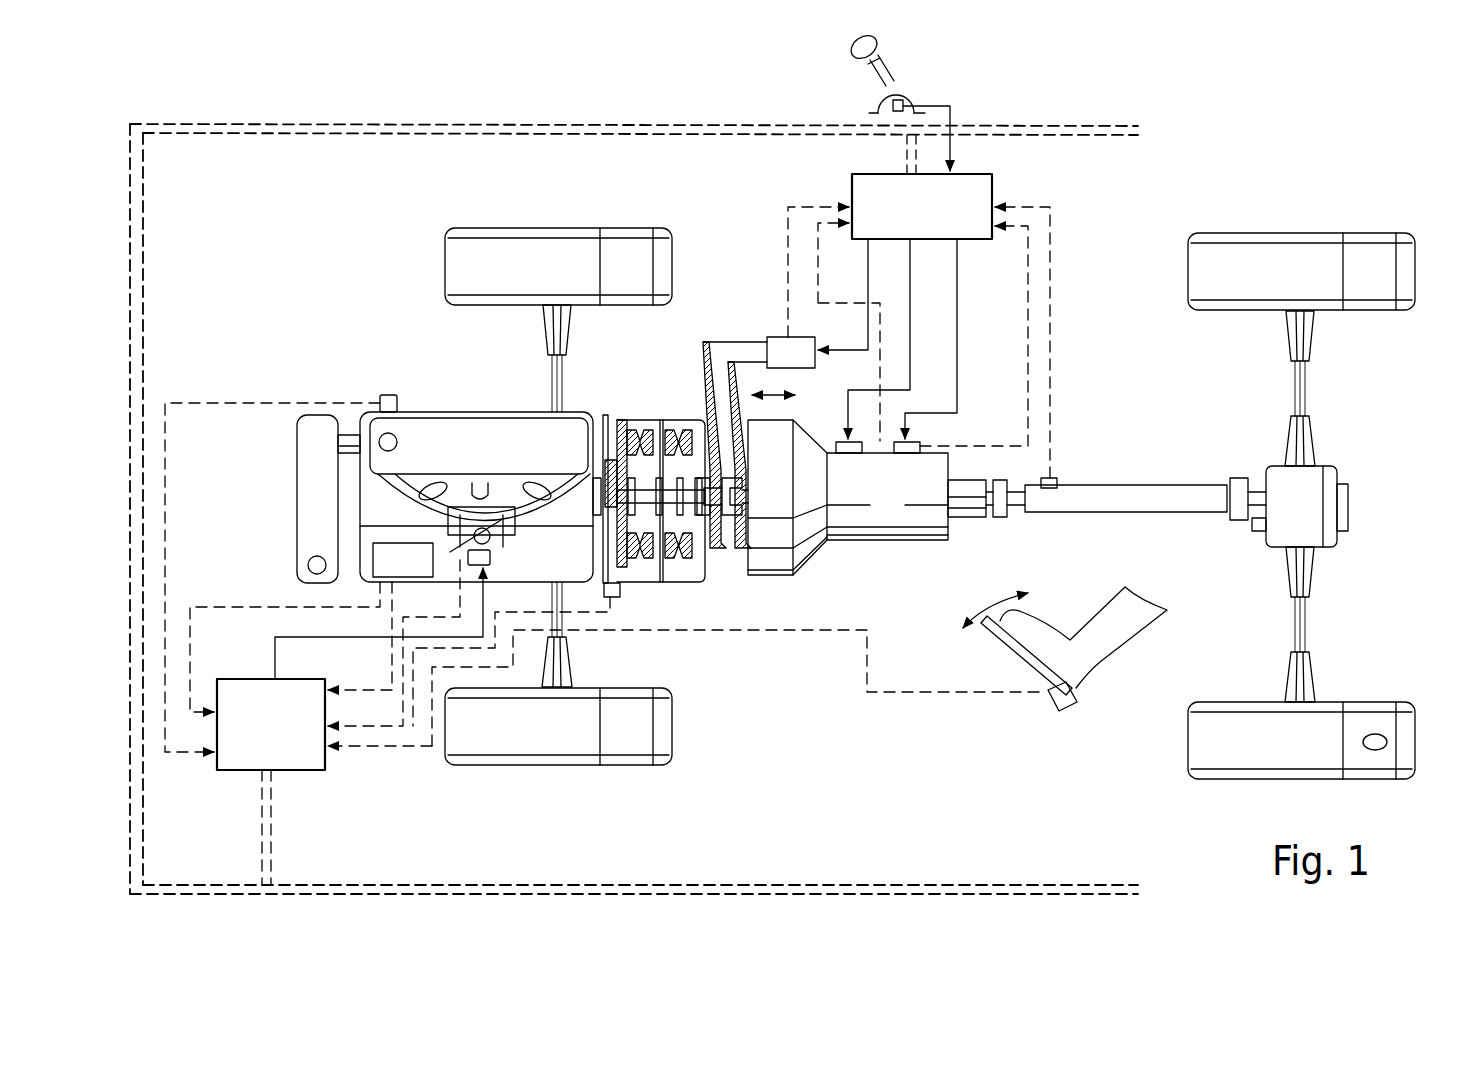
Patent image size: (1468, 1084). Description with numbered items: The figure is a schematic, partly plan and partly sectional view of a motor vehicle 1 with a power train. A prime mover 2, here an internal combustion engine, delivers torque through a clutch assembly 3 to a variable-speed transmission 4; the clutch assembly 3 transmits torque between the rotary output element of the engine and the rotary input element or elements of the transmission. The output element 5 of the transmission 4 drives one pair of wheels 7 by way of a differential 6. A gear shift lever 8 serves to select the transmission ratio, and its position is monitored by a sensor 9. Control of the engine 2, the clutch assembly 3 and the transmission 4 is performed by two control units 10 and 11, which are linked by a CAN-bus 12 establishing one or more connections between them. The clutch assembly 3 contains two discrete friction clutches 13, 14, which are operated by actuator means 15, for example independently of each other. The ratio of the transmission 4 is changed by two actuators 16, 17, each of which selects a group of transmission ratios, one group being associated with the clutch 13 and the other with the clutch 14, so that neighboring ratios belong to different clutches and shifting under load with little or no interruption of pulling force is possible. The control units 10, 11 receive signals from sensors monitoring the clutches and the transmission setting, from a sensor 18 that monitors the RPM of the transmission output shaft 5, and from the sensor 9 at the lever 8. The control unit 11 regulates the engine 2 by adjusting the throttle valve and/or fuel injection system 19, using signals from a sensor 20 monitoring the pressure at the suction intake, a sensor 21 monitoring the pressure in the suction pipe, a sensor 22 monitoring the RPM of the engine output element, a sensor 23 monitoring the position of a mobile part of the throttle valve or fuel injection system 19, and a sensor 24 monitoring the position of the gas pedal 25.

The motor vehicle 1 is at (908, 752).
The prime mover 2 is at (494, 440).
The clutch assembly 3 is at (620, 415).
The variable-speed transmission 4 is at (904, 510).
The output element 5 is at (1172, 488).
The differential 6 is at (1348, 500).
The wheels 7 is at (1382, 718).
The gear shift lever 8 is at (853, 57).
The sensor 9 is at (898, 92).
The control unit 10 is at (938, 215).
The control unit 11 is at (288, 738).
The CAN-bus 12 is at (473, 885).
The friction clutch 13 is at (635, 433).
The friction clutch 14 is at (669, 530).
The actuator means 15 is at (742, 334).
The actuator 16 is at (838, 441).
The actuator 17 is at (915, 442).
The sensor 18 is at (1052, 478).
The throttle valve and/or fuel injection system 19 is at (491, 560).
The sensor 20 is at (389, 395).
The sensor 21 is at (417, 574).
The sensor 22 is at (622, 592).
The sensor 23 is at (470, 566).
The sensor 24 is at (1068, 707).
The gas pedal 25 is at (1077, 612).